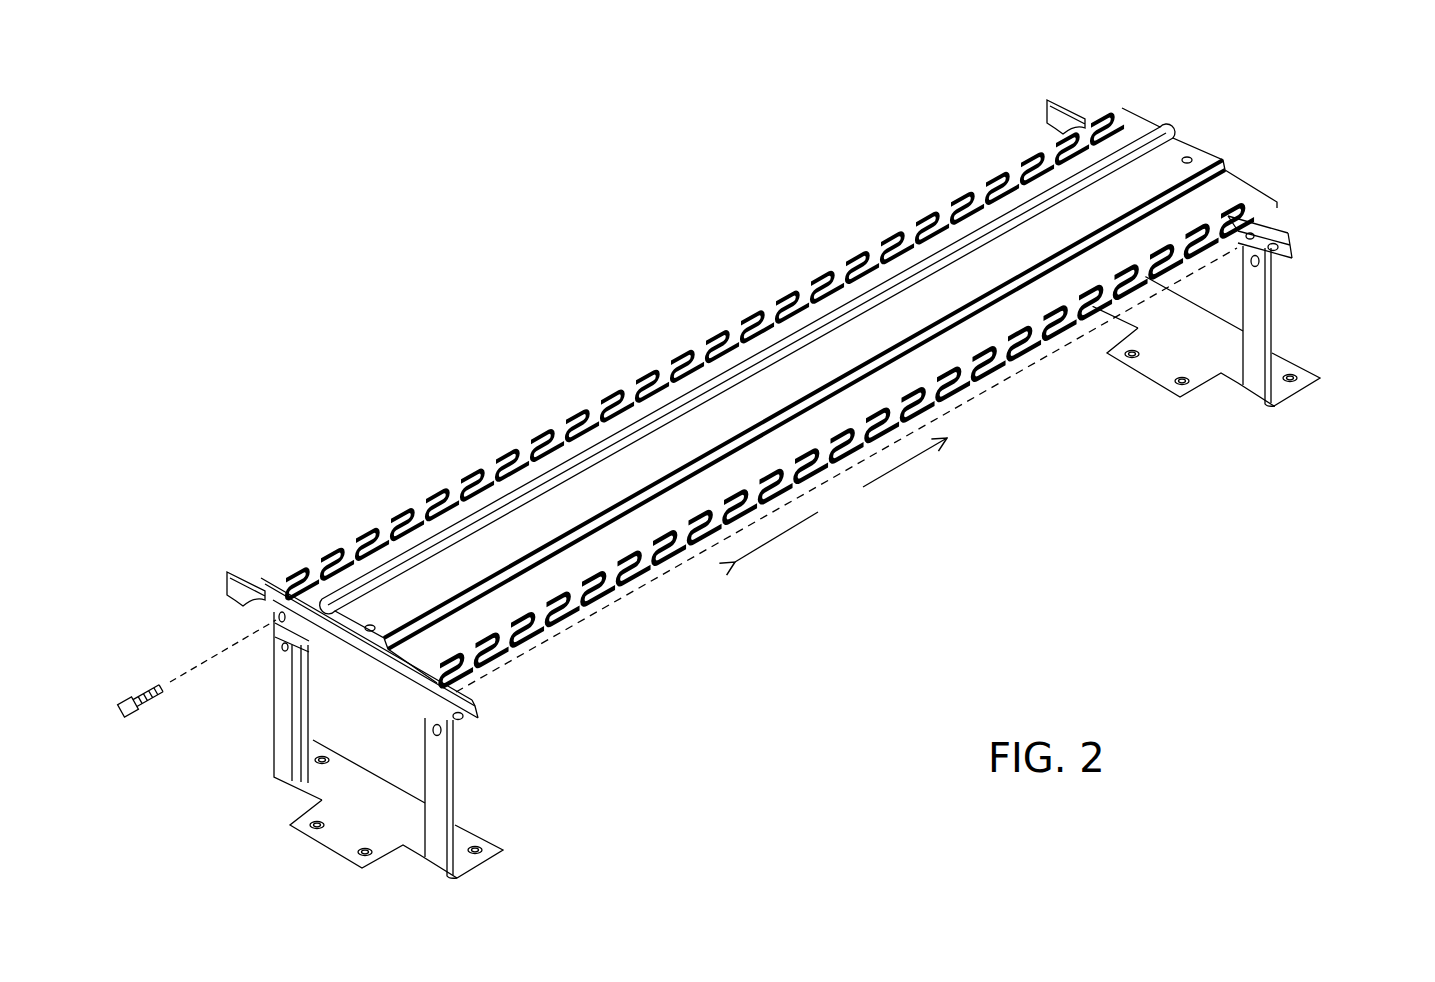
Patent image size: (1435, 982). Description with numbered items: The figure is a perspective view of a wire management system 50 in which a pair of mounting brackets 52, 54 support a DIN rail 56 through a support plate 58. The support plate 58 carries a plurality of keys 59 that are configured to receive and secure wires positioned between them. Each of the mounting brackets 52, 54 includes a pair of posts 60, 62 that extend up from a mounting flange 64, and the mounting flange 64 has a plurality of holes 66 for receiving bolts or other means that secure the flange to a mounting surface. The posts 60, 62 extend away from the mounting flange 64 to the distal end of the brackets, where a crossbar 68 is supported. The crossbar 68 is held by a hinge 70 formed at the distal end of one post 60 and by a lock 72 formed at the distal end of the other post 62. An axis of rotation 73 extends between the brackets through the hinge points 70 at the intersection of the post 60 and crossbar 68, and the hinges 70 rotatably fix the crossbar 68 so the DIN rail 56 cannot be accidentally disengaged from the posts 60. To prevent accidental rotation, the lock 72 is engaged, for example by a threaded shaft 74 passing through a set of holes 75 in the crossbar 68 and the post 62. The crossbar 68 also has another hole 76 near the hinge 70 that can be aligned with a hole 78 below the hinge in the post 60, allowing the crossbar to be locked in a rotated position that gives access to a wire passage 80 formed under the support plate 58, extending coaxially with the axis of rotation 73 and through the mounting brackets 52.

The wire management system 50 is at (1235, 115).
The mounting bracket 52 is at (250, 757).
The mounting bracket 54 is at (1300, 297).
The DIN rail 56 is at (789, 402).
The support plate 58 is at (1240, 186).
The keys 59 is at (748, 310).
The post 60 is at (447, 800).
The post 62 is at (272, 688).
The mounting flange 64 is at (379, 820).
The holes 66 is at (324, 763).
The crossbar 68 is at (225, 588).
The hinge 70 is at (417, 690).
The lock 72 is at (286, 553).
The axis of rotation 73 is at (1003, 388).
The threaded shaft 74 is at (155, 697).
The holes 75 is at (280, 612).
The hole 76 is at (470, 716).
The hole 78 is at (452, 742).
The wire passage 80 is at (841, 500).